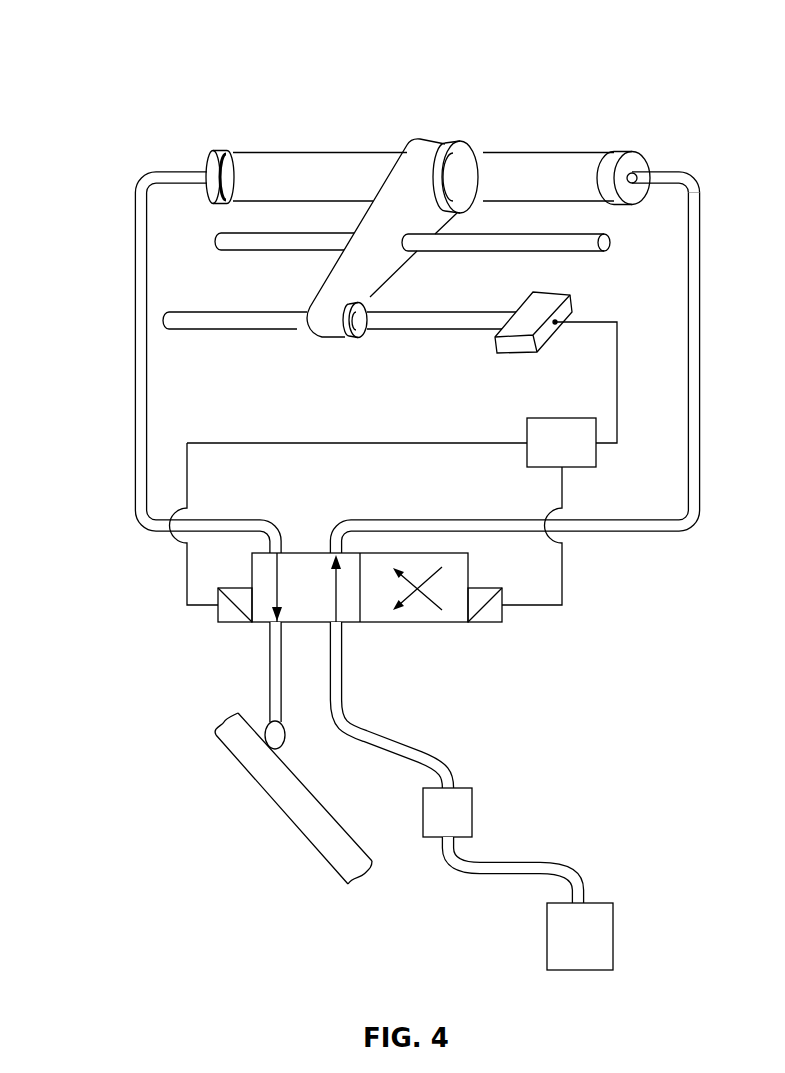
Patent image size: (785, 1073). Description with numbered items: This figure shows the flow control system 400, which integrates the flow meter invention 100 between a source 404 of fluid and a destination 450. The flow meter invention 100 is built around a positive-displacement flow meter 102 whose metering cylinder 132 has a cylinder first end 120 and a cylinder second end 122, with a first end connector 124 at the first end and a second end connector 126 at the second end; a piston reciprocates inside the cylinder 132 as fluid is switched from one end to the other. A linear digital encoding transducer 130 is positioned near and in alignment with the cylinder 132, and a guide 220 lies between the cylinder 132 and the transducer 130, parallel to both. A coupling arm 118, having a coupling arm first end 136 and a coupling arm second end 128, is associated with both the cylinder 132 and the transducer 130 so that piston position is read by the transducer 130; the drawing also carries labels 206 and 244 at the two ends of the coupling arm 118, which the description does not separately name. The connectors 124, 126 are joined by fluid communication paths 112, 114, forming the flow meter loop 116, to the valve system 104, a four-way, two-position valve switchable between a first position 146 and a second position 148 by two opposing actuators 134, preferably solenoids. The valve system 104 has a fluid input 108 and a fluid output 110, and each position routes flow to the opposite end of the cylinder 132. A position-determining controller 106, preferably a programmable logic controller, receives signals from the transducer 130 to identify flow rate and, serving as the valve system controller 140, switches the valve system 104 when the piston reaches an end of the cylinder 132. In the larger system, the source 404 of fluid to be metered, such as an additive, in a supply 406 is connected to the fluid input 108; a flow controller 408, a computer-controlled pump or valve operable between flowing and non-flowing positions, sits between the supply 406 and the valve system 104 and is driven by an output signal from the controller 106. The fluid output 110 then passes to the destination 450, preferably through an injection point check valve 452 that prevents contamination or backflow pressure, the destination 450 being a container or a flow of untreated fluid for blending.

The flow meter invention 100 is at (130, 50).
The positive-displacement flow meter 102 is at (562, 103).
The valve system 104 is at (512, 661).
The position-determining controller 106 is at (583, 468).
The fluid input 108 is at (343, 663).
The fluid output 110 is at (269, 663).
The fluid communication 112 is at (132, 503).
The fluid communication 114 is at (702, 497).
The flow meter loop 116 is at (135, 300).
The coupling arm 118 is at (367, 237).
The cylinder first end 120 is at (248, 158).
The cylinder second end 122 is at (603, 152).
The first end connector 124 is at (217, 153).
The second end connector 126 is at (638, 163).
The coupling arm second end 128 is at (325, 293).
The linear digital encoding transducer 130 is at (547, 297).
The cylinder 132 is at (528, 156).
The actuators 134 is at (218, 613).
The coupling arm first end 136 is at (427, 145).
The valve system controller 140 is at (524, 400).
The first position 146 is at (307, 550).
The second position 148 is at (407, 623).
The upper hub 206 is at (460, 147).
The guide 220 is at (517, 234).
The lower hub 244 is at (363, 335).
The flow control system 400 is at (627, 601).
The source of fluid 404 is at (613, 937).
The supply 406 is at (600, 903).
The flow controller 408 is at (472, 812).
The destination 450 is at (270, 774).
The injection point check valve 452 is at (286, 738).